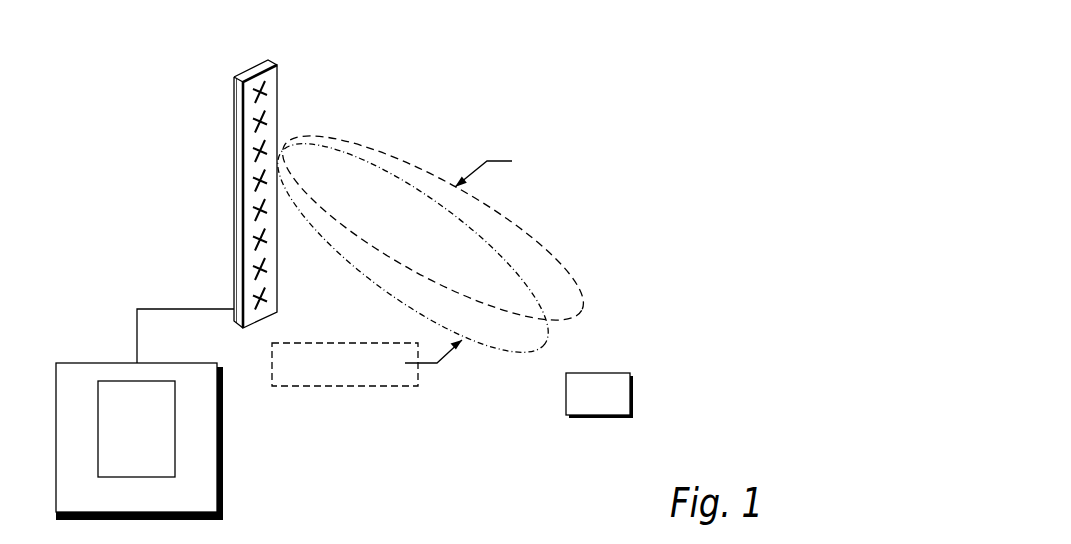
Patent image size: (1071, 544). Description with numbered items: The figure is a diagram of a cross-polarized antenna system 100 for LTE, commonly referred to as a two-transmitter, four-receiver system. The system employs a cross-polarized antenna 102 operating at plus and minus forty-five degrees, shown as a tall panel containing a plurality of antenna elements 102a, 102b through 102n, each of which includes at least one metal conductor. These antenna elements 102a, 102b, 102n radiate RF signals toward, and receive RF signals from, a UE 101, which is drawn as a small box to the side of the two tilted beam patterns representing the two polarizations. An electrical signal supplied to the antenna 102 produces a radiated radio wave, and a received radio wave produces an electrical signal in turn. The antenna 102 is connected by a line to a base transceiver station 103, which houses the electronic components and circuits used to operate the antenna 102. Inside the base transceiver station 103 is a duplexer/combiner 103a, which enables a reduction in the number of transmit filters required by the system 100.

The cross-polarized antenna system 100 is at (618, 42).
The UE 101 is at (632, 382).
The cross-polarized antenna 102 is at (277, 64).
The antenna element 102a is at (248, 83).
The antenna element 102b is at (248, 122).
The antenna element 102n is at (253, 295).
The base transceiver station 103 is at (97, 363).
The duplexer/combiner 103a is at (136, 429).